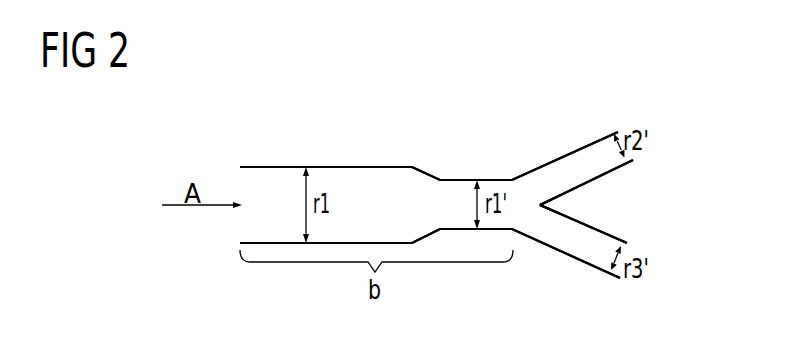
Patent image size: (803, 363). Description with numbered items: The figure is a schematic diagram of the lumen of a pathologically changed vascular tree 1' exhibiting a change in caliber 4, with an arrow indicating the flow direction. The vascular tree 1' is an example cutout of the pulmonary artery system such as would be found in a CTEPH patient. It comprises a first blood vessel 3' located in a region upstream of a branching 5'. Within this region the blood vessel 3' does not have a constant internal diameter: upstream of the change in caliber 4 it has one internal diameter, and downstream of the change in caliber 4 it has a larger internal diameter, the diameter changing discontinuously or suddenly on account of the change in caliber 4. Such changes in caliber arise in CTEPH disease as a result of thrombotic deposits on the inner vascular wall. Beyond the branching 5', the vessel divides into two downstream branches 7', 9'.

The vascular tree 1' is at (436, 155).
The first blood vessel 3' is at (326, 170).
The change in caliber 4 is at (430, 166).
The branching 5' is at (574, 210).
The first branch channel 7' is at (572, 140).
The second branch channel 9' is at (569, 267).